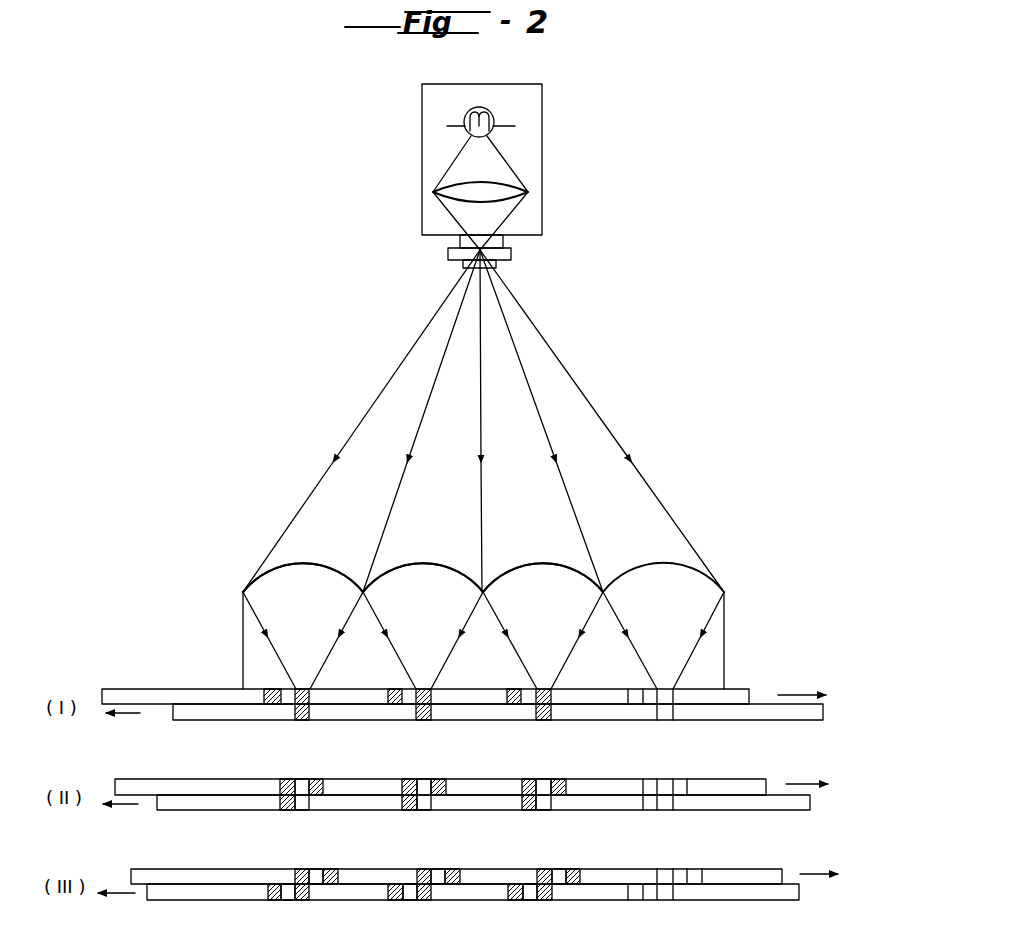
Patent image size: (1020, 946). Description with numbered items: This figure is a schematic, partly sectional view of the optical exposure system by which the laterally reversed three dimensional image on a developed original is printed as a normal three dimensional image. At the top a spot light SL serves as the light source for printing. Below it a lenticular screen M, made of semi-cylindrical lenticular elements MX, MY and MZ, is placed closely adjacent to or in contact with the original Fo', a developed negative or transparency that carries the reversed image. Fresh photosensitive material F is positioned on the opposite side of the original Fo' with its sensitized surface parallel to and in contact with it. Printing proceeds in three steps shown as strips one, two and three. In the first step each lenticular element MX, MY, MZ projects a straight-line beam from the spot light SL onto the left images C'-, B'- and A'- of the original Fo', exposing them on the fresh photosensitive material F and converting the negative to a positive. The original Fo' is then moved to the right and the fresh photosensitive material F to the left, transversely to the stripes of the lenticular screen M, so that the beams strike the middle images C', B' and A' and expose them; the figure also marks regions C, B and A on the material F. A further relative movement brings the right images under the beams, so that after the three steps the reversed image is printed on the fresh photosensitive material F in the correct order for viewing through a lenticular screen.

The spot light SL is at (528, 158).
The lenticular screen M is at (712, 637).
The lenticular element MX is at (338, 553).
The lenticular element MY is at (446, 553).
The lenticular element MZ is at (561, 553).
The fresh photosensitive material F is at (823, 713).
The original Fo' is at (789, 772).
The middle image A' is at (537, 778).
The left image A'- is at (546, 800).
The region A is at (530, 892).
The middle image B' is at (418, 778).
The left image B'- is at (428, 800).
The middle image B is at (410, 908).
The middle image C' is at (298, 779).
The left image C'- is at (298, 801).
The region C is at (287, 908).